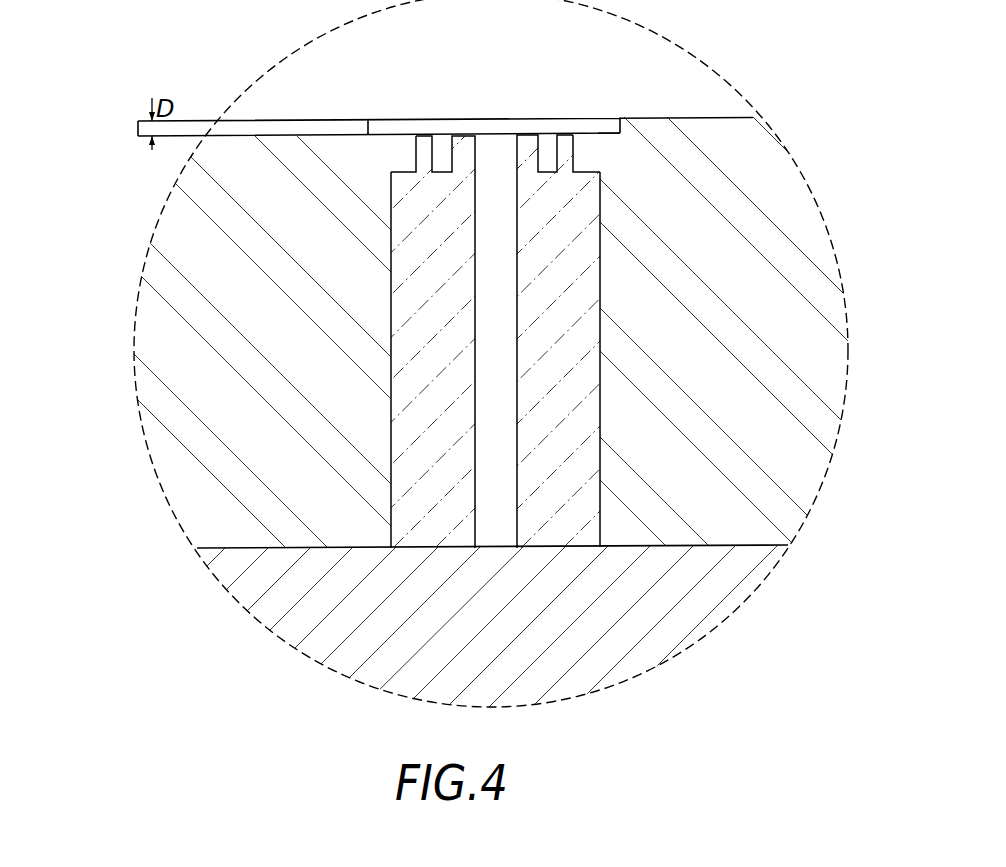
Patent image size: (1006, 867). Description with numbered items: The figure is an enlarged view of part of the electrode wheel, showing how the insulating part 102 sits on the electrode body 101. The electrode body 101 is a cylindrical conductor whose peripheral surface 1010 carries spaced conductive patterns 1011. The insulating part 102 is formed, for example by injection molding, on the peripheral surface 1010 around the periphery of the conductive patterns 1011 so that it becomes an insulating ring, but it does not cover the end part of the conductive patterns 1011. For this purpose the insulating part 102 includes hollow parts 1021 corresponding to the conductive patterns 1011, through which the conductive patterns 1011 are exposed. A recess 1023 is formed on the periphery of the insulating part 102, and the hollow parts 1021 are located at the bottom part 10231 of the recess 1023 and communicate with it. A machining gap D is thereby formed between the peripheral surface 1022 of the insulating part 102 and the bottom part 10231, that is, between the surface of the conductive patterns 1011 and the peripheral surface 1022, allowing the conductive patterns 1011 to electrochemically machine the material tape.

The electrode body 101 is at (307, 612).
The peripheral surface 1010 is at (250, 548).
The conductive pattern 1011 is at (399, 160).
The insulating part 102 is at (750, 258).
The hollow part 1021 is at (600, 360).
The peripheral surface 1022 is at (707, 117).
The recess 1023 is at (620, 133).
The bottom part 10231 is at (603, 135).